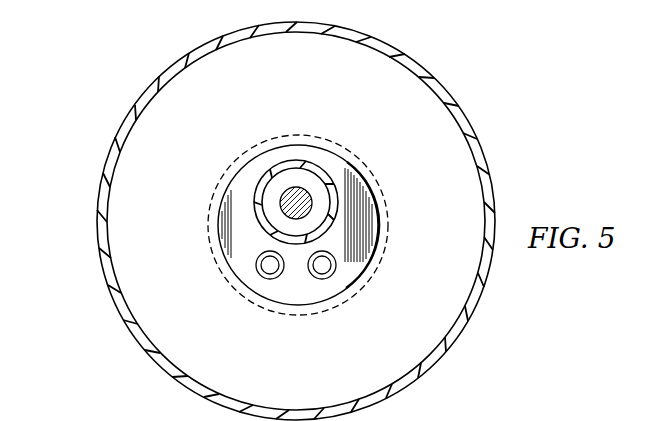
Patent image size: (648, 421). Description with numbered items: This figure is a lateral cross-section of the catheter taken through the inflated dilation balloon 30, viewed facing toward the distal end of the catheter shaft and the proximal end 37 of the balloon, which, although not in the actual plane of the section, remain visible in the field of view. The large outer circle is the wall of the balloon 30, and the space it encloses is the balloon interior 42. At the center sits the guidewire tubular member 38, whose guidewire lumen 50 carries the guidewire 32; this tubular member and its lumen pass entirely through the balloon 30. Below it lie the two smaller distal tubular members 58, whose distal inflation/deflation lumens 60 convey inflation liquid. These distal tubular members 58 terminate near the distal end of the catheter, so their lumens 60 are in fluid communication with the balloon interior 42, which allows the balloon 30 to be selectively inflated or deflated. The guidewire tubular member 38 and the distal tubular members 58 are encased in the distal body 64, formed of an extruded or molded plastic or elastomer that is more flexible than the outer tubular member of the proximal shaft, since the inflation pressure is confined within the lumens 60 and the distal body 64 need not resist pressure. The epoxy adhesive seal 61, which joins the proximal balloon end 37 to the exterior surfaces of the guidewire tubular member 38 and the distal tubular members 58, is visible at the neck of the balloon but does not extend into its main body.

The dilation balloon 30 is at (486, 165).
The guidewire 32 is at (297, 188).
The proximal end of the balloon 37 is at (388, 229).
The guidewire tubular member 38 is at (316, 167).
The balloon interior 42 is at (176, 168).
The guidewire lumen 50 is at (272, 185).
The distal tubular members 58 is at (256, 262).
The distal inflation/deflation lumens 60 is at (314, 274).
The epoxy adhesive seal 61 is at (240, 219).
The distal body 64 is at (377, 257).